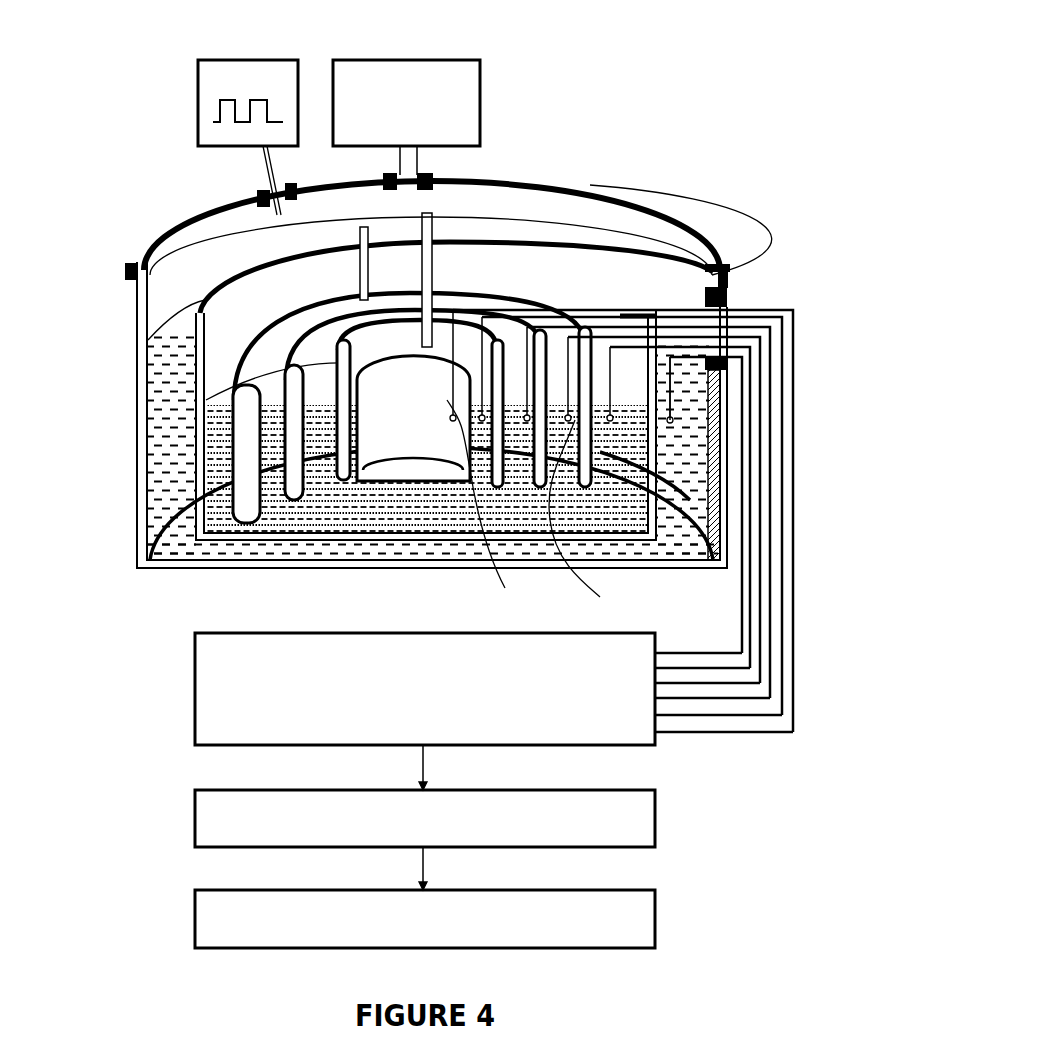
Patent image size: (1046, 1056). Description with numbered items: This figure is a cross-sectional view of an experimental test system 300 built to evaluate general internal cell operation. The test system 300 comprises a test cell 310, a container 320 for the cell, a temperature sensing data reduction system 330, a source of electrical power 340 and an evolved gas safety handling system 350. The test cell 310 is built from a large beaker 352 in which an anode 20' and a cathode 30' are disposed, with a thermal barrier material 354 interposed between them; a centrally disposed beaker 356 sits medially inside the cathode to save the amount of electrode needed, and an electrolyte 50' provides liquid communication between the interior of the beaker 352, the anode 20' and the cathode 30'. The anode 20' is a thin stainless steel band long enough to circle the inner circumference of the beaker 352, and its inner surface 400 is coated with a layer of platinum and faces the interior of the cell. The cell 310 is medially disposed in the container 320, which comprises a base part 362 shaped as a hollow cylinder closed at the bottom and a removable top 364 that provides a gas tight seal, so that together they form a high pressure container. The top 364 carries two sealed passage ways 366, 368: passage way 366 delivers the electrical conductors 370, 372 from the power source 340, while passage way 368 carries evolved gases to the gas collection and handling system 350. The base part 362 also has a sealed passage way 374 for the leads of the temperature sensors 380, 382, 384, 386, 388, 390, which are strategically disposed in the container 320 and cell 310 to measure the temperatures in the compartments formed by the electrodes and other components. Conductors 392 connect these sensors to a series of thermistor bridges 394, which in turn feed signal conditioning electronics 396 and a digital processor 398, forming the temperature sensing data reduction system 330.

The test system 300 is at (613, 107).
The test cell 310 is at (660, 305).
The container 320 is at (733, 272).
The temperature sensing data reduction system 330 is at (853, 673).
The source of electrical power 340 is at (234, 43).
The evolved gas safety handling system 350 is at (396, 50).
The large beaker 352 is at (700, 520).
The thermal barrier material 354 is at (553, 340).
The centrally disposed beaker 356 is at (445, 417).
The base part 362 is at (140, 336).
The removable top 364 is at (472, 182).
The sealed passage way 366 is at (260, 197).
The sealed passage way 368 is at (385, 180).
The electrical conductor 370 is at (590, 185).
The electrical conductor 372 is at (293, 213).
The sealed passage way 374 is at (730, 297).
The temperature sensor 380 is at (413, 447).
The temperature sensor 382 is at (477, 510).
The temperature sensor 384 is at (721, 378).
The temperature sensor 386 is at (605, 519).
The temperature sensor 388 is at (680, 440).
The temperature sensor 390 is at (673, 473).
The conductors 392 is at (815, 615).
The thermistor bridges 394 is at (195, 697).
The signal conditioning electronics 396 is at (195, 813).
The digital processor 398 is at (195, 920).
The inner surface 400 is at (270, 342).
The cathode 30' is at (561, 342).
The anode 20' is at (753, 476).
The electrolyte 50' is at (510, 509).